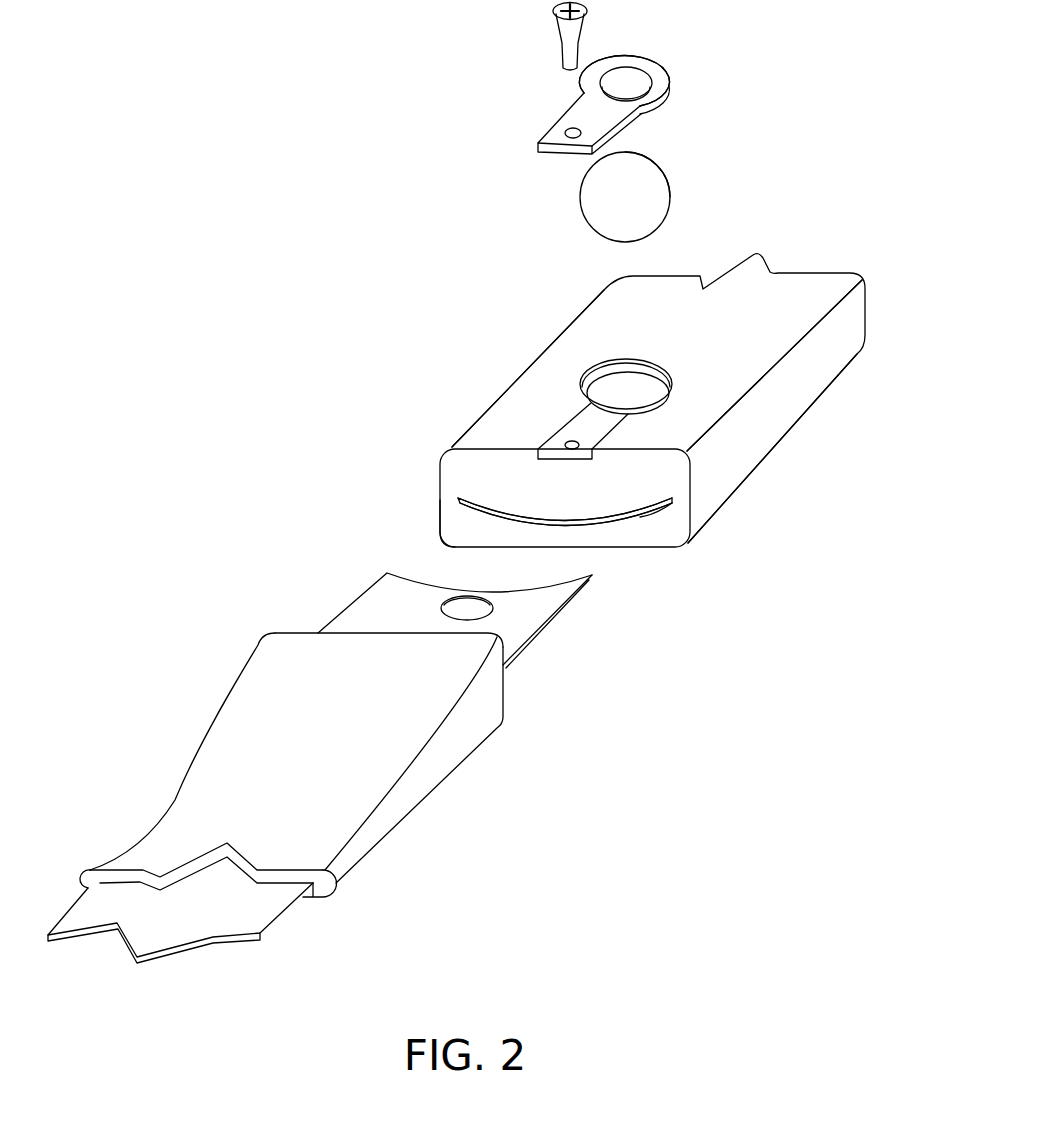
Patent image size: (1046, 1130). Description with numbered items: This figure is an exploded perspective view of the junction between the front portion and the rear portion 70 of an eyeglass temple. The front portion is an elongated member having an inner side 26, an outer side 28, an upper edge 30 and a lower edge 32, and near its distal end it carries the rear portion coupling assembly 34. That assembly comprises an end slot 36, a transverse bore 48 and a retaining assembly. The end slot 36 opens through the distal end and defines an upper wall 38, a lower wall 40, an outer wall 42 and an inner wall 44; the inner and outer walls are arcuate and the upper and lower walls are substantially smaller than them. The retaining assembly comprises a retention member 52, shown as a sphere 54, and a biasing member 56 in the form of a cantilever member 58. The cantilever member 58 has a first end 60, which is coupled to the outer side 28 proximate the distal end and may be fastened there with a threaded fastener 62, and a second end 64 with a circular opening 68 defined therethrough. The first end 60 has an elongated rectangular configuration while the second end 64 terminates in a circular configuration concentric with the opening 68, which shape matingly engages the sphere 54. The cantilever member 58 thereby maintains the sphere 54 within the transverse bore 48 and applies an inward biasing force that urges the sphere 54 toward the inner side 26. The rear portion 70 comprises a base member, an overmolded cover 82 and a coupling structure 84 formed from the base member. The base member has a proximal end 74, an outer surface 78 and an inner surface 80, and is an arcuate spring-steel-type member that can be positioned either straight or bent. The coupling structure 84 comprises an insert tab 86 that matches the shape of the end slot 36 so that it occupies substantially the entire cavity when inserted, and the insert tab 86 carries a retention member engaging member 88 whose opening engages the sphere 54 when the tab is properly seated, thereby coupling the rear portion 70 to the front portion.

The inner side 26 is at (760, 302).
The outer side 28 is at (775, 443).
The upper edge 30 is at (805, 387).
The lower edge 32 is at (530, 367).
The rear portion coupling assembly 34 is at (420, 460).
The end slot 36 is at (450, 515).
The upper wall 38 is at (672, 498).
The lower wall 40 is at (458, 498).
The outer wall 42 is at (598, 522).
The inner wall 44 is at (649, 520).
The transverse bore 48 is at (622, 379).
The retention member 52 is at (680, 200).
The sphere 54 is at (667, 173).
The biasing member 56 is at (603, 104).
The cantilever member 58 is at (547, 133).
The first end 60 is at (547, 155).
The threaded fastener 62 is at (560, 45).
The second end 64 is at (670, 57).
The opening 68 is at (630, 80).
The rear portion 70 is at (127, 807).
The proximal end 74 is at (517, 712).
The outer surface 78 is at (237, 942).
The inner surface 80 is at (247, 910).
The overmolded cover 82 is at (225, 722).
The coupling structure 84 is at (320, 607).
The insert tab 86 is at (517, 655).
The retention member engaging member 88 is at (480, 607).